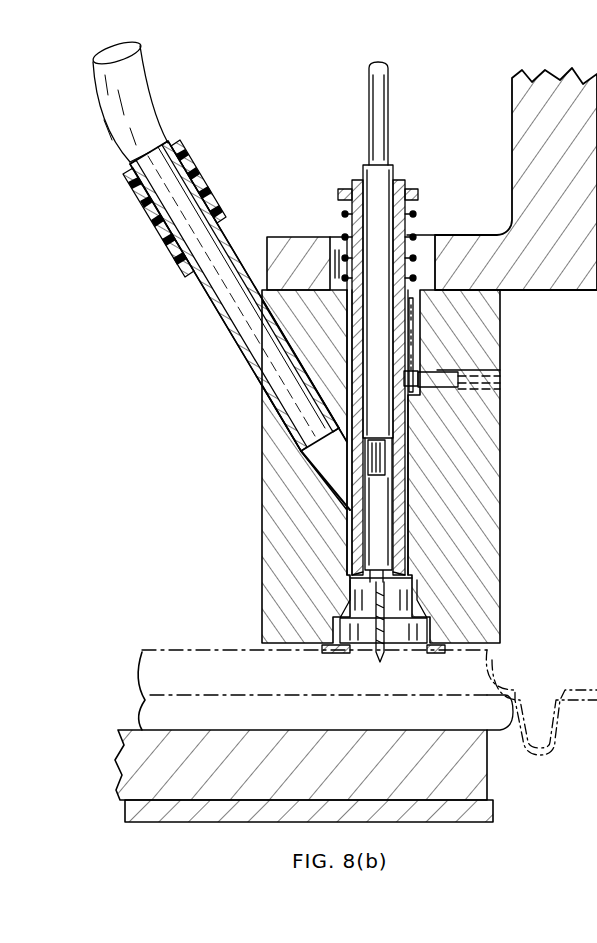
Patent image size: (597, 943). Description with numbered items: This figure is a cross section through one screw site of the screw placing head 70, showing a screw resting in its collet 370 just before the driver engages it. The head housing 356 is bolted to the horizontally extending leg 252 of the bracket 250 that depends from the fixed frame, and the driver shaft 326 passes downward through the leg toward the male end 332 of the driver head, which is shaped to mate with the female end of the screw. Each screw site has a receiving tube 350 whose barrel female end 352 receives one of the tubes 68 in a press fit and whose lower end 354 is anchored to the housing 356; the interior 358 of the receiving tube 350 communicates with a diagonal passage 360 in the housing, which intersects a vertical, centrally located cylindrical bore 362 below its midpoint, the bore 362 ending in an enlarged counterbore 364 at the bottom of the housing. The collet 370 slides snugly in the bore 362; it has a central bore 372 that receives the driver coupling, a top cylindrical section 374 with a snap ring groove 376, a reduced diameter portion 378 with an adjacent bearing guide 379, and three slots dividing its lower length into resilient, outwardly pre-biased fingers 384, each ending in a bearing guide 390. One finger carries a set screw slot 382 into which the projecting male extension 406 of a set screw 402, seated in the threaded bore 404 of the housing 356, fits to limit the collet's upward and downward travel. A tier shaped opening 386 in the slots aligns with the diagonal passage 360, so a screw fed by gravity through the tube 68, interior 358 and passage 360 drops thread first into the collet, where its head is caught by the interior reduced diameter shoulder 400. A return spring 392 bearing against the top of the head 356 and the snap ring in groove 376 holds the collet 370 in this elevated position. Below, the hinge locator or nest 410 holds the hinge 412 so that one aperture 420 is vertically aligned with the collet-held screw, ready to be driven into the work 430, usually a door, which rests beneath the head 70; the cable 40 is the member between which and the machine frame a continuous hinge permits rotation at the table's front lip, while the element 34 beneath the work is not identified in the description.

The base plate 34 is at (322, 774).
The cable 40 is at (116, 668).
The tube 68 is at (148, 80).
The screw placing head 70 is at (508, 470).
The bracket 250 is at (579, 164).
The horizontally extending leg 252 is at (286, 238).
The driver shaft 326 is at (392, 124).
The male end 332 is at (412, 470).
The receiving tube 350 is at (211, 296).
The barrel female end 352 is at (172, 232).
The lower end 354 is at (283, 421).
The head housing 356 is at (504, 545).
The interior 358 is at (232, 323).
The diagonal passage 360 is at (312, 453).
The vertical cylindrical bore 362 is at (402, 447).
The enlarged counterbore 364 is at (430, 640).
The collet 370 is at (420, 413).
The central bore 372 is at (406, 206).
The top cylindrical section 374 is at (418, 211).
The snap ring groove 376 is at (396, 188).
The reduced diameter portion 378 is at (438, 260).
The bearing guide 379 is at (350, 296).
The set screw slot 382 is at (413, 330).
The fingers 384 is at (349, 362).
The tier shaped opening 386 is at (410, 487).
The bearing guide 390 is at (351, 584).
The return spring 392 is at (345, 222).
The reduced diameter shoulder 400 is at (420, 572).
The set screw 402 is at (444, 376).
The threaded bore 404 is at (490, 386).
The projecting male extension 406 is at (414, 372).
The hinge locator or nest 410 is at (340, 650).
The hinge 412 is at (540, 684).
The aperture 420 is at (388, 662).
The work 430 is at (318, 724).